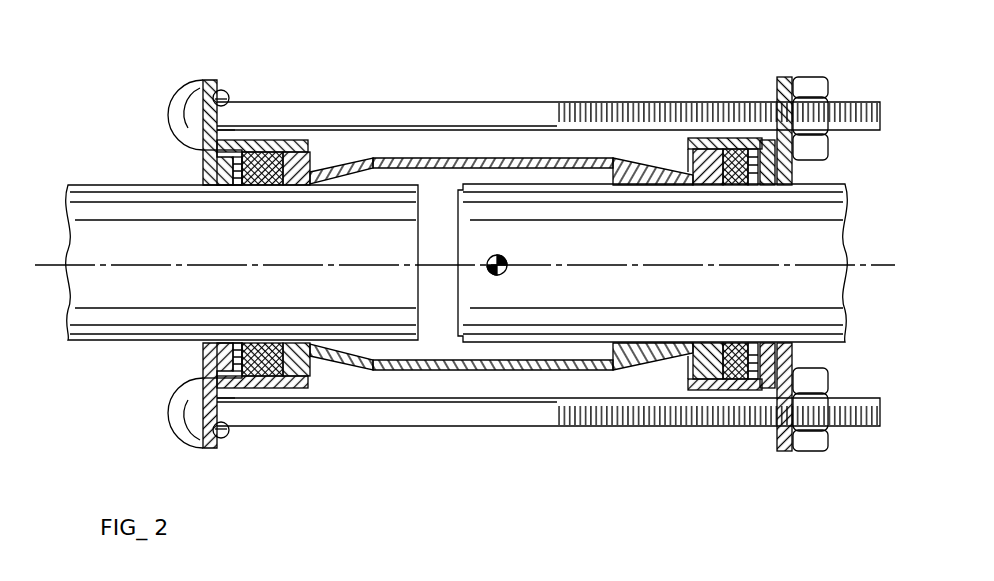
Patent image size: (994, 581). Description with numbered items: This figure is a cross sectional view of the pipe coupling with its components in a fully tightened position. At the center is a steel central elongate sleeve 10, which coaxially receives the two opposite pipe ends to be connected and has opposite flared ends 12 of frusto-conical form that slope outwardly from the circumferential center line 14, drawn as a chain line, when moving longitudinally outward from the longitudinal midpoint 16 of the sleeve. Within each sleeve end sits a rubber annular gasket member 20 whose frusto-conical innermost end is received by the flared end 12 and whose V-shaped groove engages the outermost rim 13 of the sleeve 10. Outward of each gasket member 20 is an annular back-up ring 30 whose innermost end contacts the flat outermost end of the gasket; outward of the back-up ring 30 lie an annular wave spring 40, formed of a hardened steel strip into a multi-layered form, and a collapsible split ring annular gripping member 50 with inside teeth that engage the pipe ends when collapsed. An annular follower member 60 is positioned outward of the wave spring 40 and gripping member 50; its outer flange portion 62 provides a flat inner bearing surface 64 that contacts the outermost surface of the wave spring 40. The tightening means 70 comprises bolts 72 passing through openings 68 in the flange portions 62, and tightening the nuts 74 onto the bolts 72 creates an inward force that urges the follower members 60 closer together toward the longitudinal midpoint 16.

The central elongate sleeve 10 is at (522, 156).
The flared end 12 is at (318, 170).
The outermost rim 13 is at (302, 163).
The circumferential center line 14 is at (197, 267).
The longitudinal midpoint 16 is at (500, 256).
The annular gasket member 20 is at (290, 186).
The annular back-up ring 30 is at (250, 186).
The annular wave spring 40 is at (760, 100).
The collapsible split ring annular gripping member 50 is at (775, 186).
The annular follower member 60 is at (207, 72).
The outer flange portion 62 is at (200, 170).
The inner bearing surface 64 is at (250, 150).
The opening 68 is at (232, 92).
The tightening means 70 is at (392, 100).
The bolt 72 is at (322, 105).
The nut 74 is at (806, 78).